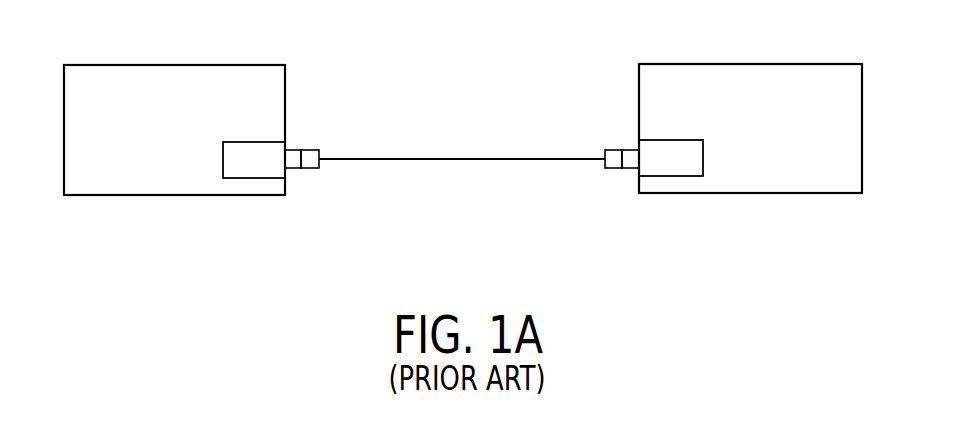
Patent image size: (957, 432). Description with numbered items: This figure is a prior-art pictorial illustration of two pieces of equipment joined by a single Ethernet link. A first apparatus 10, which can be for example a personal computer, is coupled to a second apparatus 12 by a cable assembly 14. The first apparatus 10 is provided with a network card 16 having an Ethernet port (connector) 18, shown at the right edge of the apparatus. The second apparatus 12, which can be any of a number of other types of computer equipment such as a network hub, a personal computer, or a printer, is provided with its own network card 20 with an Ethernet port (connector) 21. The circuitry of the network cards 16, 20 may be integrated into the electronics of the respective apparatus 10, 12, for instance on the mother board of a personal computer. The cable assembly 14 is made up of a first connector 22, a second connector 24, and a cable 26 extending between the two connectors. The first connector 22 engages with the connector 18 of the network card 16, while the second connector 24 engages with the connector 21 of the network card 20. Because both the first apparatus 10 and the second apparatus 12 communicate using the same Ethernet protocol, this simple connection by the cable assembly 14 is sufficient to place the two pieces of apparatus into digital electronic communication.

The first apparatus 10 is at (253, 72).
The second apparatus 12 is at (665, 72).
The cable assembly 14 is at (461, 128).
The network card 16 is at (248, 173).
The Ethernet port (connector) 18 is at (293, 153).
The network card 20 is at (675, 170).
The Ethernet port (connector) 21 is at (630, 150).
The first connector 22 is at (312, 166).
The second connector 24 is at (615, 166).
The cable 26 is at (527, 160).